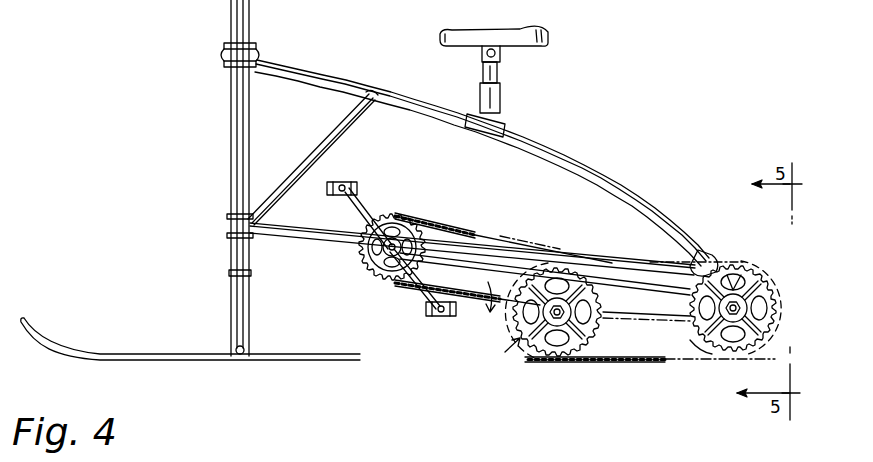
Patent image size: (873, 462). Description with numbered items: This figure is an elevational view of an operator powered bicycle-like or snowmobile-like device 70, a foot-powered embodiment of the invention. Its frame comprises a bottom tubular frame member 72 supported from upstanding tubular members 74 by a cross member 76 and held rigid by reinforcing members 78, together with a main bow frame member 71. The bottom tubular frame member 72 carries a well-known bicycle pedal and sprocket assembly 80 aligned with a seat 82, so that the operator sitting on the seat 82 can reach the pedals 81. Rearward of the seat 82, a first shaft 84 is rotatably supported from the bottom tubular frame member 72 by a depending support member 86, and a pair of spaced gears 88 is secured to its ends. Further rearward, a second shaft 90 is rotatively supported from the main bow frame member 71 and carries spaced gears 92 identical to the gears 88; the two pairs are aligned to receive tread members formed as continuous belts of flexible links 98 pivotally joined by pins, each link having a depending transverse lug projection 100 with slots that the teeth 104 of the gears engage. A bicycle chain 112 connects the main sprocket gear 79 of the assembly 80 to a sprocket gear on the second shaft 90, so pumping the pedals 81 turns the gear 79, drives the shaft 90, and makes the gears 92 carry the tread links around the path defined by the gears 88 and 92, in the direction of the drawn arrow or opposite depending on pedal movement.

The operator powered bicycle-like or snowmobile-like device 70 is at (460, 177).
The main bow frame member 71 is at (706, 228).
The bottom tubular frame member 72 is at (305, 238).
The upstanding tubular members 74 is at (231, 165).
The cross member 76 is at (232, 228).
The reinforcing members 78 is at (346, 132).
The main sprocket gear 79 is at (380, 272).
The bicycle pedal and sprocket assembly 80 is at (404, 194).
The pedals 81 is at (428, 316).
The seat 82 is at (534, 27).
The first shaft 84 is at (504, 357).
The depending support member 86 is at (548, 292).
The spaced gears 88 is at (553, 355).
The second shaft 90 is at (740, 292).
The spaced gears 92 is at (716, 352).
The flexible links 98 is at (590, 363).
The transverse lug projection 100 is at (645, 361).
The teeth 104 is at (603, 333).
The bicycle chain 112 is at (470, 230).